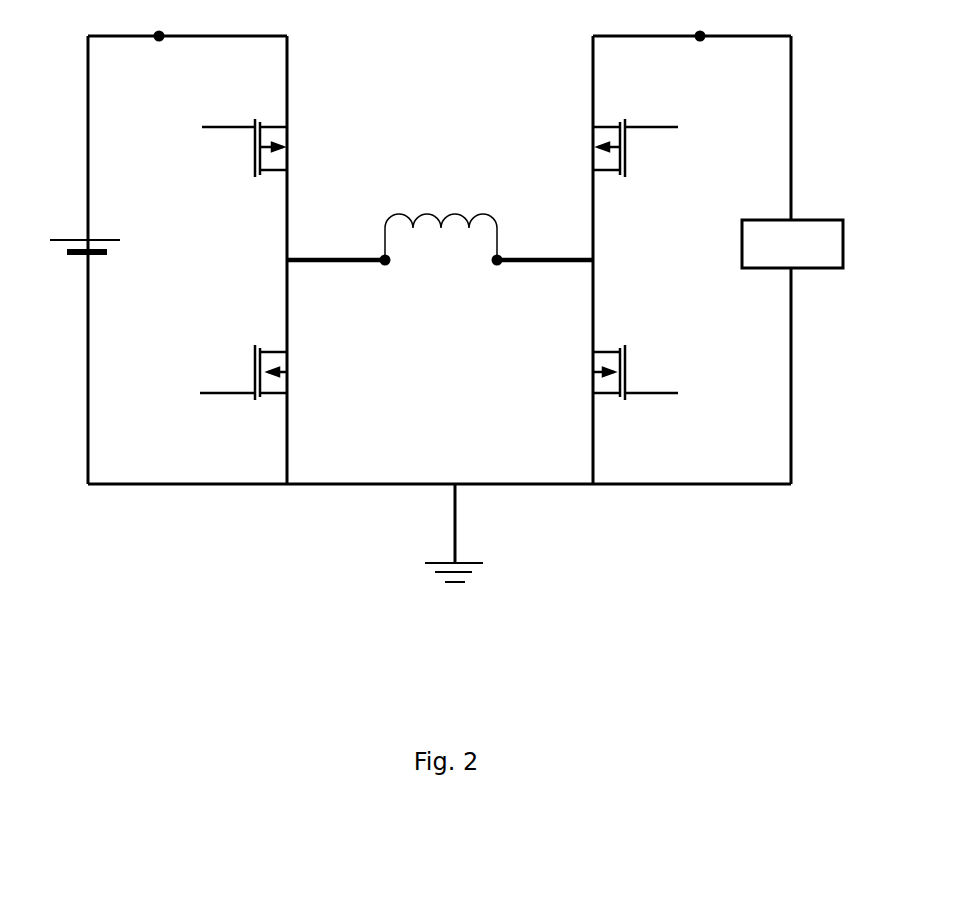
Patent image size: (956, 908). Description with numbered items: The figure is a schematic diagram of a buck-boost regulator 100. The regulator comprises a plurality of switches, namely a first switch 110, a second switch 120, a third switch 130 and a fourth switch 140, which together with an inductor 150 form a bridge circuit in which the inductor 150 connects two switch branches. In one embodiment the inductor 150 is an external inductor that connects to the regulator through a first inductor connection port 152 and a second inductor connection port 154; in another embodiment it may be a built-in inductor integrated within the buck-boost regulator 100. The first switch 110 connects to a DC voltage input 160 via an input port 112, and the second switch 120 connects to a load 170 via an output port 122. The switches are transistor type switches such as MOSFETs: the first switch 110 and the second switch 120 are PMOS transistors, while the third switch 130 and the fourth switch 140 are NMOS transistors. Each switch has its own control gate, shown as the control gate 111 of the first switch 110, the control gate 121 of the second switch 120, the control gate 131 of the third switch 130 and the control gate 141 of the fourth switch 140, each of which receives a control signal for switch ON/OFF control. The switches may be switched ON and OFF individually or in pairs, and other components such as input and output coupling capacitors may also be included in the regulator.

The buck-boost regulator 100 is at (675, 535).
The first switch 110 is at (288, 103).
The control gate 111 is at (208, 123).
The input port 112 is at (159, 40).
The second switch 120 is at (593, 105).
The control gate 121 is at (660, 128).
The output port 122 is at (700, 40).
The third switch 130 is at (287, 383).
The control gate 131 is at (233, 390).
The fourth switch 140 is at (595, 375).
The control gate 141 is at (648, 388).
The inductor 150 is at (470, 227).
The first inductor connection port 152 is at (385, 262).
The second inductor connection port 154 is at (497, 262).
The DC voltage input 160 is at (100, 256).
The load 170 is at (768, 268).